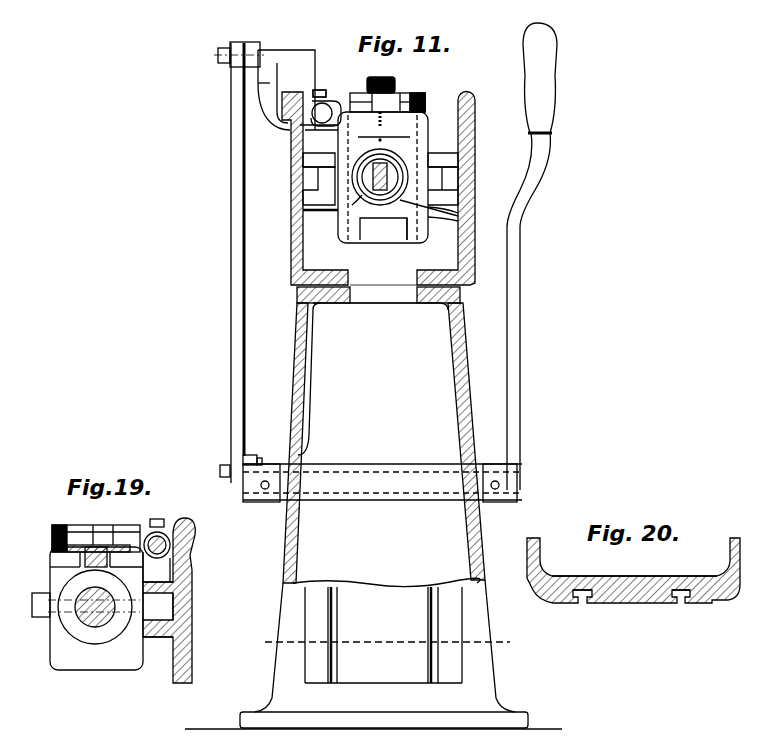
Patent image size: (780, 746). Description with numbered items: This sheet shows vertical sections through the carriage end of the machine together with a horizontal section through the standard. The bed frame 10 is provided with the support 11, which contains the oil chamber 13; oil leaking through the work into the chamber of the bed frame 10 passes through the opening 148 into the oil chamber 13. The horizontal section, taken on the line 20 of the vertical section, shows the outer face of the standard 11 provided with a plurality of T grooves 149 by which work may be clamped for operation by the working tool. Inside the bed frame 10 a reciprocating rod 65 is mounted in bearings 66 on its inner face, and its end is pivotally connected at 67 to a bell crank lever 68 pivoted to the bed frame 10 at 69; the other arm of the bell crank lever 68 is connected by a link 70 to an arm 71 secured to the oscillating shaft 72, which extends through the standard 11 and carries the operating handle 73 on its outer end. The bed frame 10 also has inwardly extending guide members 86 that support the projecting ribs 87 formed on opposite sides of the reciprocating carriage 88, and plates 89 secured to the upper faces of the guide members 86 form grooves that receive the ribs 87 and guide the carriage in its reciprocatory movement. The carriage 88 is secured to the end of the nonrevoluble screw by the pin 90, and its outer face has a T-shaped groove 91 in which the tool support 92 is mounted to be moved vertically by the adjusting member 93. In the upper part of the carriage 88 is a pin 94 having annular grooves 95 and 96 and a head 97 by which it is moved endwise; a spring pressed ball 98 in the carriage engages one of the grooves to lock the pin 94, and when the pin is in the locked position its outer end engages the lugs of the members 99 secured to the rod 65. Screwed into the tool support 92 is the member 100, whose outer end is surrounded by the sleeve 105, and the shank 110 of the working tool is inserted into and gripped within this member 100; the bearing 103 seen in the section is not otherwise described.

In FIG. 11, the bed frame 10 is at (292, 266).
In FIG. 19, the bed frame 10 is at (192, 591).
In FIG. 11, the support 11 is at (286, 558).
In FIG. 20, the support 11 is at (730, 591).
In FIG. 11, the oil chamber 13 is at (383, 609).
In FIG. 20, the oil chamber 13 is at (634, 565).
In FIG. 11, the section line 20 is at (389, 643).
In FIG. 11, the reciprocating rod 65 is at (320, 117).
In FIG. 19, the bearings 66 is at (179, 528).
In FIG. 11, the pivotal connection 67 is at (300, 50).
In FIG. 11, the bell crank lever 68 is at (250, 42).
In FIG. 11, the pivot 69 is at (319, 90).
In FIG. 11, the link 70 is at (229, 309).
In FIG. 11, the arm 71 is at (250, 456).
In FIG. 11, the oscillating shaft 72 is at (386, 478).
In FIG. 11, the operating handle 73 is at (521, 313).
In FIG. 11, the guide members 86 is at (318, 211).
In FIG. 19, the guide members 86 is at (165, 631).
In FIG. 11, the projecting ribs 87 is at (328, 180).
In FIG. 19, the projecting ribs 87 is at (34, 607).
In FIG. 11, the reciprocating carriage 88 is at (419, 230).
In FIG. 19, the reciprocating carriage 88 is at (93, 669).
In FIG. 11, the plates 89 is at (306, 161).
In FIG. 19, the plates 89 is at (163, 581).
In FIG. 19, the pin 90 is at (63, 610).
In FIG. 11, the T-shaped groove 91 is at (375, 228).
In FIG. 11, the tool support 92 is at (396, 228).
In FIG. 11, the adjusting member 93 is at (392, 82).
In FIG. 11, the pin 94 is at (341, 102).
In FIG. 19, the pin 94 is at (72, 530).
In FIG. 19, the annular groove 95 is at (92, 540).
In FIG. 19, the annular groove 96 is at (113, 538).
In FIG. 11, the head 97 is at (423, 100).
In FIG. 19, the head 97 is at (52, 536).
In FIG. 19, the spring pressed ball 98 is at (80, 553).
In FIG. 11, the members 99 is at (330, 102).
In FIG. 19, the members 99 is at (146, 533).
In FIG. 11, the member 100 is at (372, 180).
In FIG. 11, the bearing 103 is at (390, 160).
In FIG. 11, the sleeve 105 is at (355, 200).
In FIG. 11, the shank 110 is at (462, 221).
In FIG. 11, the opening 148 is at (379, 293).
In FIG. 11, the T grooves 149 is at (427, 622).
In FIG. 20, the T grooves 149 is at (583, 604).